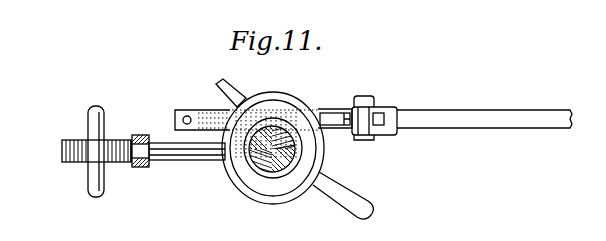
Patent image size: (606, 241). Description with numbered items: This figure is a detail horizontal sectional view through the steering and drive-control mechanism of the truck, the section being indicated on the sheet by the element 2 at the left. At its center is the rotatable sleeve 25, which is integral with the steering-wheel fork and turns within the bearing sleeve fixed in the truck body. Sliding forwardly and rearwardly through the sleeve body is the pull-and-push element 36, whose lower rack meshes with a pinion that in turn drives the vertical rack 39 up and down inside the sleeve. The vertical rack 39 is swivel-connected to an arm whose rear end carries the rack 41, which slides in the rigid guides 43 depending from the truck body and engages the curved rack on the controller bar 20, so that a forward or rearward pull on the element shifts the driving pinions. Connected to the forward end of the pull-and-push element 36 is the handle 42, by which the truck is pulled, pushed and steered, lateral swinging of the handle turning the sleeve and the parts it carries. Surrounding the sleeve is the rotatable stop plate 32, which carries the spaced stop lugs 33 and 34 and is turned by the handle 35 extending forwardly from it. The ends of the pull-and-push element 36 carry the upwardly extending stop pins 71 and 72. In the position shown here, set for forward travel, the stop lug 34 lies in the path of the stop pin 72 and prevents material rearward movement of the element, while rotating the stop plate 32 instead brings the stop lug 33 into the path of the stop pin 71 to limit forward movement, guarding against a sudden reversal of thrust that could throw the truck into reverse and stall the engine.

The knurled adjusting shaft 2 is at (62, 147).
The controller bar 20 is at (90, 175).
The rack 41 is at (131, 140).
The rigid guides 43 is at (138, 135).
The pull-and-push element 36 is at (182, 108).
The stop pin 71 is at (190, 114).
The stop lug 33 is at (228, 89).
The stop plate 32 is at (290, 97).
The vertical rack 39 is at (282, 172).
The rotatable sleeve 25 is at (265, 171).
The stop lug 34 is at (320, 112).
The stop pin 72 is at (342, 118).
The handle 42 is at (433, 112).
The handle 35 is at (362, 200).